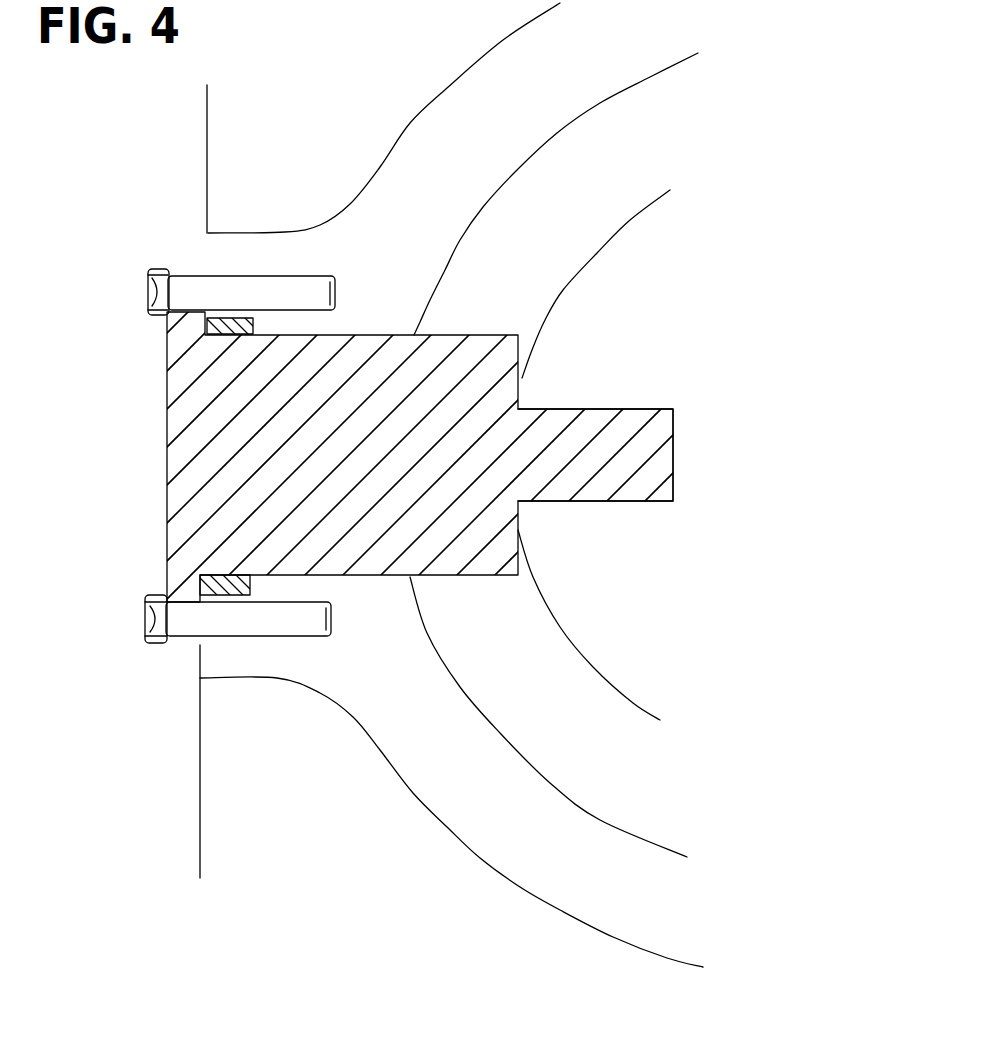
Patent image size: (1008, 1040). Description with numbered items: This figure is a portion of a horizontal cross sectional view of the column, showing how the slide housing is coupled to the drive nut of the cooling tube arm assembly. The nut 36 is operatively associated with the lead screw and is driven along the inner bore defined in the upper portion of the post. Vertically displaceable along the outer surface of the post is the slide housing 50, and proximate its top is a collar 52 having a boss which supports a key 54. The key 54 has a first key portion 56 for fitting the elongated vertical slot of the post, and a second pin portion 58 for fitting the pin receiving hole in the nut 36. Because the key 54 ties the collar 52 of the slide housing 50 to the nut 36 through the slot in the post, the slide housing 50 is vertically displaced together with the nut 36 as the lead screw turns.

The nut 36 is at (668, 603).
The slide housing 50 is at (478, 760).
The collar 52 is at (400, 747).
The key 54 is at (260, 463).
The first key portion 56 is at (307, 540).
The second pin portion 58 is at (633, 408).